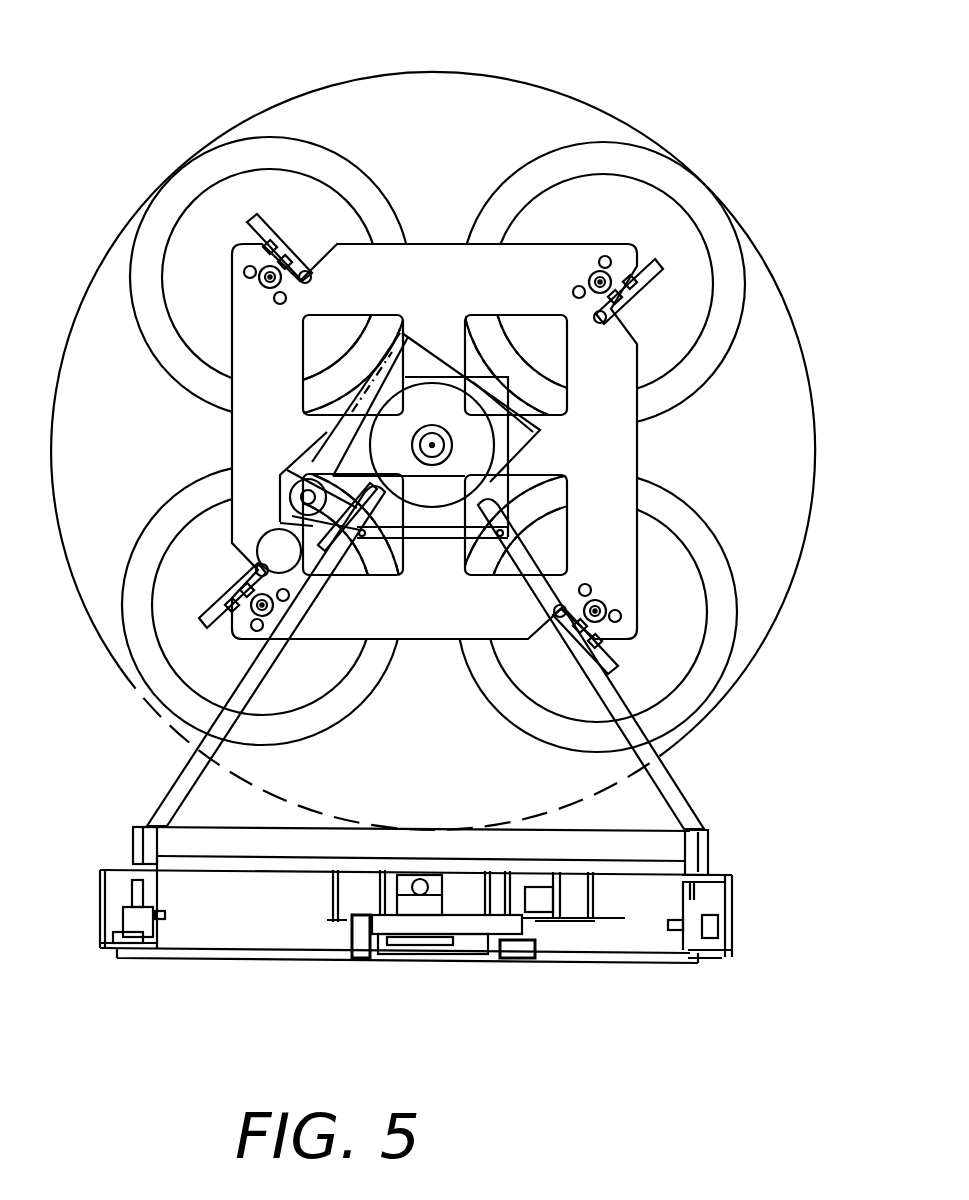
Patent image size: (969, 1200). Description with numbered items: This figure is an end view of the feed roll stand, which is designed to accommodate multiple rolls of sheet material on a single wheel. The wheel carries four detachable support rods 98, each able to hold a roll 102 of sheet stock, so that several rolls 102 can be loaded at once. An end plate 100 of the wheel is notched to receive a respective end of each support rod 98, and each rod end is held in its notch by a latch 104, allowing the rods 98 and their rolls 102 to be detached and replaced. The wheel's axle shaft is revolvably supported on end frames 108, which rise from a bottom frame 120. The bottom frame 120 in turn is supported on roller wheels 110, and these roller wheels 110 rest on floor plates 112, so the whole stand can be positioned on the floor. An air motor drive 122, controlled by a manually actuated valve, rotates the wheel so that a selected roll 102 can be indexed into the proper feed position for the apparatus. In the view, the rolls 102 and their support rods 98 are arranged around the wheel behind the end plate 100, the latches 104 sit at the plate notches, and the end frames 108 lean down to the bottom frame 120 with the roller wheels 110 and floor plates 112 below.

The detachable support rod 98 is at (587, 268).
The end plate 100 is at (424, 257).
The roll of sheet stock 102 is at (270, 135).
The latch 104 is at (289, 256).
The end frame 108 is at (180, 778).
The roller wheel 110 is at (127, 917).
The floor plate 112 is at (150, 943).
The bottom frame 120 is at (248, 826).
The air motor drive 122 is at (431, 381).